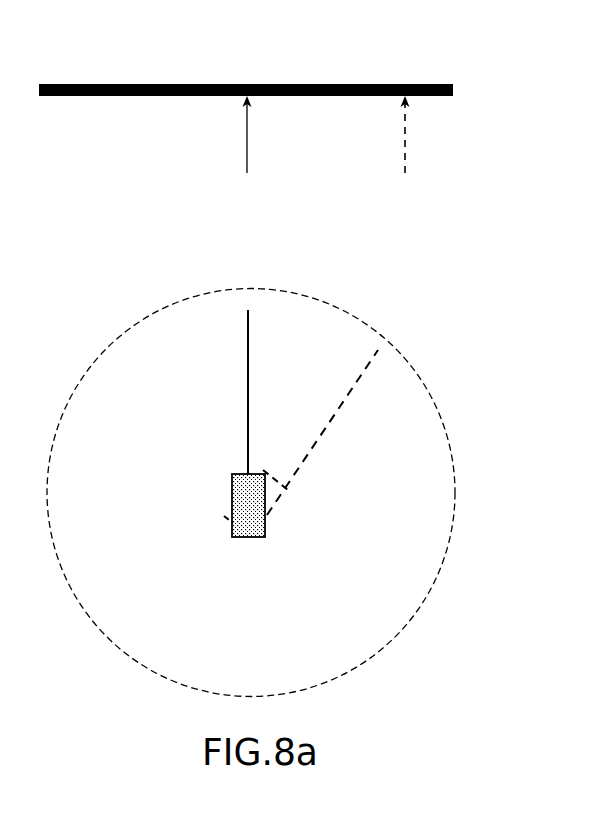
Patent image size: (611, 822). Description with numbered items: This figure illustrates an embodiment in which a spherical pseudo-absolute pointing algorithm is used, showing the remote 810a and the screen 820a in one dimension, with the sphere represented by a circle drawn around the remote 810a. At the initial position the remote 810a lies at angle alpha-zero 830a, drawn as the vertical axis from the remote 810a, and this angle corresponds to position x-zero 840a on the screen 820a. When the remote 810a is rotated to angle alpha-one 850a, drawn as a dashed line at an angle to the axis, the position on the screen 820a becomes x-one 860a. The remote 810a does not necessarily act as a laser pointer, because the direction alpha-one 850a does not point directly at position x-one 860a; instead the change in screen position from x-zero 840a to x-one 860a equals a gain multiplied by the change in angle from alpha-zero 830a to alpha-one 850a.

The screen 820a is at (172, 77).
The position x0 840a is at (252, 97).
The position x1 860a is at (409, 98).
The angle alpha0 830a is at (250, 360).
The angle alpha1 850a is at (352, 387).
The remote 810a is at (265, 535).